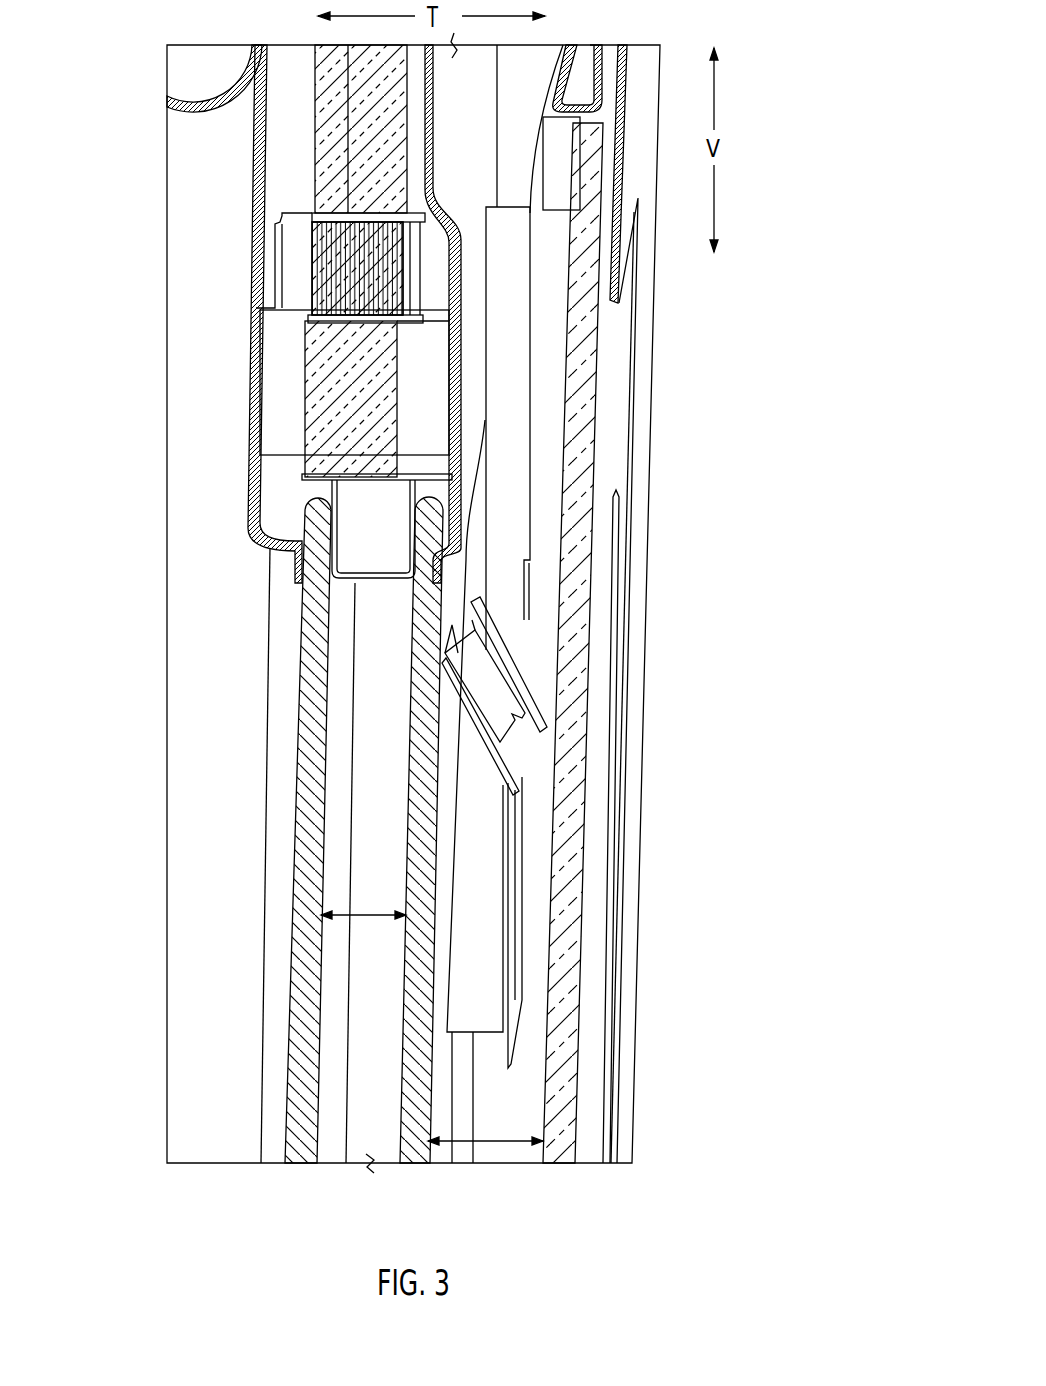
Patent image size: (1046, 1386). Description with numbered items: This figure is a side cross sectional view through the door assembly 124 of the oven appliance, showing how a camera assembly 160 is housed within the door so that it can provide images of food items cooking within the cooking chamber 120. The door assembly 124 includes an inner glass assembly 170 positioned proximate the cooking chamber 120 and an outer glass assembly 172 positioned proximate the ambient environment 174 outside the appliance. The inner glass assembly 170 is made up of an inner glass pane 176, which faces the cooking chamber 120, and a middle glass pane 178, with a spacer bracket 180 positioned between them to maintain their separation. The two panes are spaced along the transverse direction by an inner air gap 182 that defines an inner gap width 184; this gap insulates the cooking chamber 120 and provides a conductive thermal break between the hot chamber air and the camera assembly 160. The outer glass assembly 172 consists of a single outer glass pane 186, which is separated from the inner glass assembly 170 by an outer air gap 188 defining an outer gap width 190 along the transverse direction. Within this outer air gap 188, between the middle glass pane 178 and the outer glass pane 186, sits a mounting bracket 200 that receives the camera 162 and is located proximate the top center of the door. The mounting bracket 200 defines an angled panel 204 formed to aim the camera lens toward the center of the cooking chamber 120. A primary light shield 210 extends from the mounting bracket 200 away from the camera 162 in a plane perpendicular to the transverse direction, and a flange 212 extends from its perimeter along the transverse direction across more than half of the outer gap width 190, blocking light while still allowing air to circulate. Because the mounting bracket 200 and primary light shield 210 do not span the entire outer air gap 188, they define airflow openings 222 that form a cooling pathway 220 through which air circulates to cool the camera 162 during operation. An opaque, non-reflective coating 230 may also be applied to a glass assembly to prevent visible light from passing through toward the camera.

The cooking chamber 120 is at (192, 607).
The door assembly 124 is at (762, 877).
The camera assembly 160 is at (480, 710).
The camera 162 is at (468, 661).
The inner glass assembly 170 is at (423, 1173).
The outer glass assembly 172 is at (566, 1176).
The ambient environment 174 is at (755, 430).
The inner glass pane 176 is at (287, 1112).
The middle glass pane 178 is at (403, 1047).
The spacer bracket 180 is at (332, 493).
The inner air gap 182 is at (360, 993).
The inner gap width 184 is at (377, 914).
The outer glass pane 186 is at (560, 1040).
The outer air gap 188 is at (534, 1100).
The outer gap width 190 is at (499, 1144).
The mounting bracket 200 is at (525, 783).
The angled panel 204 is at (503, 750).
The primary light shield 210 is at (510, 923).
The flange 212 is at (505, 860).
The cooling pathway 220 is at (536, 988).
The airflow opening 222 is at (486, 1047).
The coating 230 is at (618, 347).